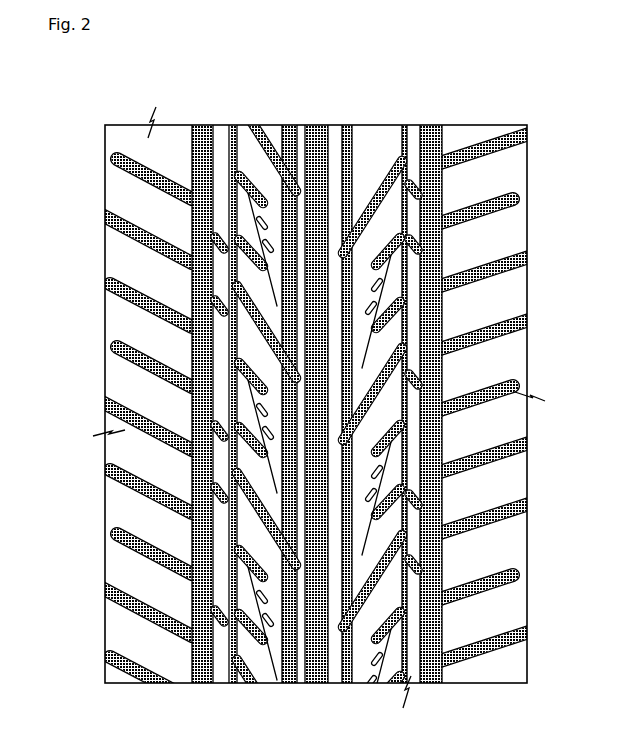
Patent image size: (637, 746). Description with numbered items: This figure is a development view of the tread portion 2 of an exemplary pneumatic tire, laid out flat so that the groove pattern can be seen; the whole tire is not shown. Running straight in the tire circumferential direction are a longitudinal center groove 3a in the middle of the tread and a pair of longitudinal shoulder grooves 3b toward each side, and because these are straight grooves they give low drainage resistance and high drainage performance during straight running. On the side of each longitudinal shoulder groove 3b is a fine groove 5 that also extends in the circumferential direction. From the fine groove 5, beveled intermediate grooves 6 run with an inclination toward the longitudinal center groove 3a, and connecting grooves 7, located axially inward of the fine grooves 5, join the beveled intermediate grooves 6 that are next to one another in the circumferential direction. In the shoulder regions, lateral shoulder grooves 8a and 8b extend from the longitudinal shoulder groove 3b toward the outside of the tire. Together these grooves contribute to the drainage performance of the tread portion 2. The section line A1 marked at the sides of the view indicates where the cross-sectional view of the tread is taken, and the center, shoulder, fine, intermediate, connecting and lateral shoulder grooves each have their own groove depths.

The tread portion 2 is at (100, 110).
The longitudinal center groove 3a is at (319, 128).
The longitudinal shoulder groove 3b is at (200, 603).
The fine groove 5 is at (232, 522).
The beveled intermediate groove 6 is at (240, 318).
The connecting groove 7 is at (265, 268).
The lateral shoulder groove 8a is at (158, 170).
The lateral shoulder groove 8b is at (150, 241).
The A1-A1 cross-section line A1 is at (99, 390).